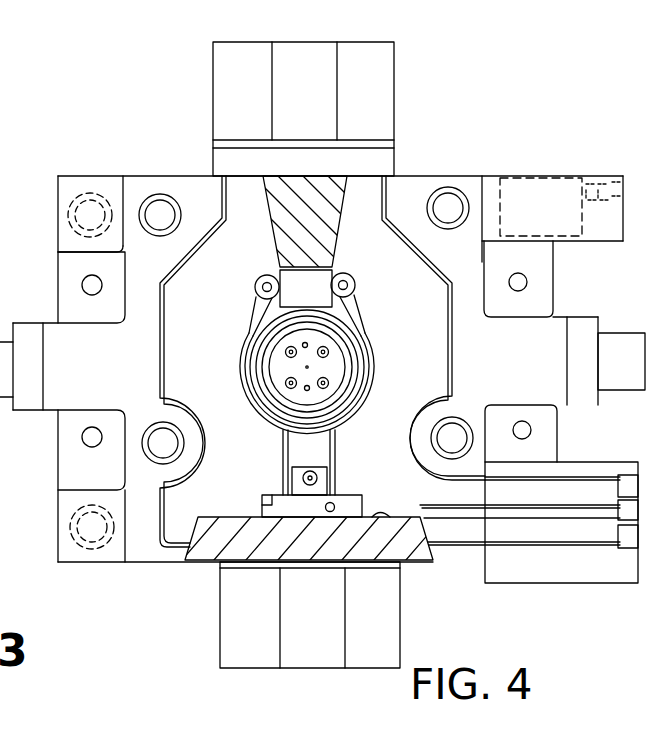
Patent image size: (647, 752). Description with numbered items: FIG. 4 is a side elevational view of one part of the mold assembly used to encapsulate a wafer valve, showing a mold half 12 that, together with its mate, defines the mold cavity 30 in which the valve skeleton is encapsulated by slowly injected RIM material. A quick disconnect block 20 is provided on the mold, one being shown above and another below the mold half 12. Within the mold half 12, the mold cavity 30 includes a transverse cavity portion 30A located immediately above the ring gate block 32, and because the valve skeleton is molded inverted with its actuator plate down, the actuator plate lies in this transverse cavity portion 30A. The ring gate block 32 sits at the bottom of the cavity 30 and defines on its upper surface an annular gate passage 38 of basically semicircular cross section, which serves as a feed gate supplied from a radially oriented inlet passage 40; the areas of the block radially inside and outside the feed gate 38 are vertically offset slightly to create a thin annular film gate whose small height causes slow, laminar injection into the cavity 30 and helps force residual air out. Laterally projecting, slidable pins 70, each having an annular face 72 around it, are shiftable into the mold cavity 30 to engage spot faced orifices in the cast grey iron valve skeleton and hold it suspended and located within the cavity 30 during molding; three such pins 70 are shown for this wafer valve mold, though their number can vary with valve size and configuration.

The mold half 12 is at (53, 402).
The quick disconnect block 20 is at (387, 110).
The mold cavity 30 is at (413, 331).
The transverse cavity portion 30A is at (270, 503).
The ring gate block 32 is at (417, 550).
The gate passage 38 is at (232, 522).
The inlet passage 40 is at (379, 513).
The slidable pin 70 is at (265, 296).
The annular face 72 is at (256, 285).